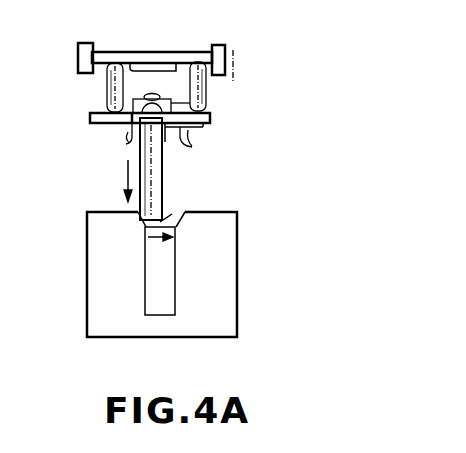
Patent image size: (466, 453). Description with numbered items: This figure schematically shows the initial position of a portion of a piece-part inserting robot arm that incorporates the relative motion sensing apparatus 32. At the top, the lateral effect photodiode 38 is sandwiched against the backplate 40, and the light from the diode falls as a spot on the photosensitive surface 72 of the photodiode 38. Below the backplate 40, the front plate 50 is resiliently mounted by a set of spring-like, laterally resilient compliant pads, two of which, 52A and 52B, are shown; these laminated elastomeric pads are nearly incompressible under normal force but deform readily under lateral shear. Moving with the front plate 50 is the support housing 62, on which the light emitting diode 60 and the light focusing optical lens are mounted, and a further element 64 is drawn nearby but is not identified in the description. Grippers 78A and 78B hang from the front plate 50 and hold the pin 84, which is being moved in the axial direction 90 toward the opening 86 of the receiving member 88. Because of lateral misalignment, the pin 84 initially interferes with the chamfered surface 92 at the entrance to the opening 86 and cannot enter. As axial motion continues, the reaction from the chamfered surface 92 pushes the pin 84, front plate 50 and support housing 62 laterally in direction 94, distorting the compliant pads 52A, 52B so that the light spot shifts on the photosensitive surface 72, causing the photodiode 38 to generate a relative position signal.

The relative motion sensing apparatus 32 is at (76, 65).
The lateral effect photodiode 38 is at (161, 60).
The backplate 40 is at (227, 50).
The photosensitive surface 72 is at (131, 65).
The compliant pad 52A is at (106, 92).
The compliant pad 52B is at (206, 96).
The support housing 62 is at (150, 96).
The light emitting diode 60 is at (195, 108).
The support member 64 is at (134, 107).
The front plate 50 is at (210, 121).
The gripper 78A is at (128, 133).
The gripper 78B is at (188, 131).
The pin 84 is at (160, 178).
The axial direction 90 is at (124, 172).
The receiving member 88 is at (223, 220).
The chamfered surface 92 is at (140, 216).
The lateral direction 94 is at (166, 224).
The opening 86 is at (150, 272).